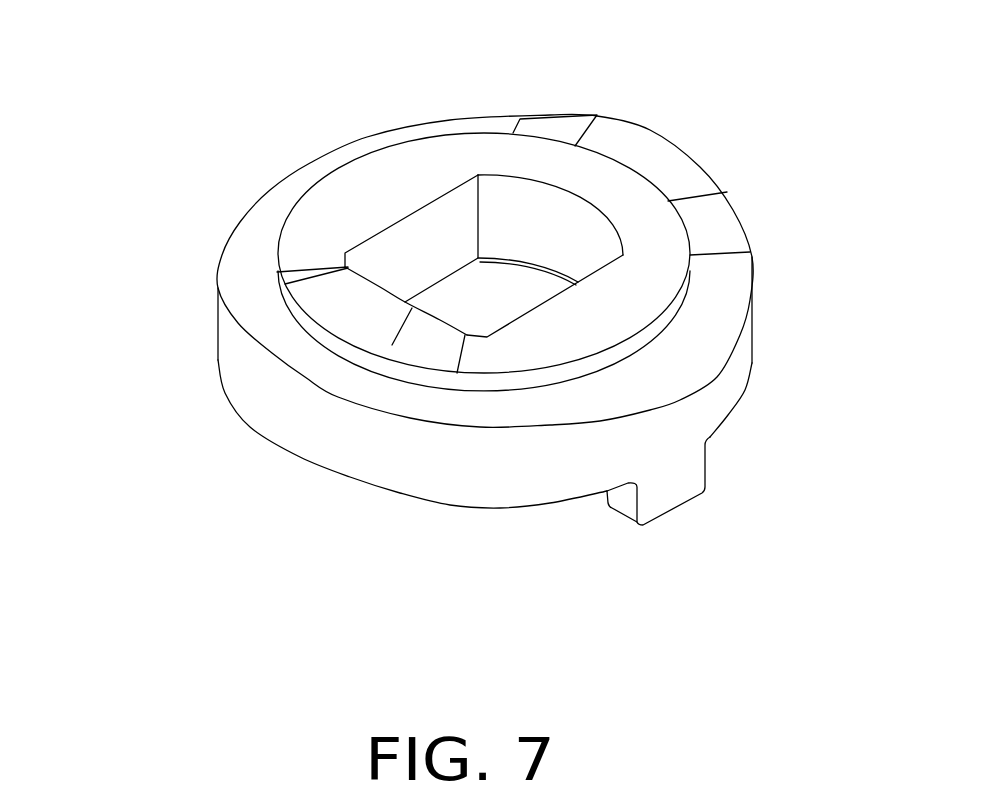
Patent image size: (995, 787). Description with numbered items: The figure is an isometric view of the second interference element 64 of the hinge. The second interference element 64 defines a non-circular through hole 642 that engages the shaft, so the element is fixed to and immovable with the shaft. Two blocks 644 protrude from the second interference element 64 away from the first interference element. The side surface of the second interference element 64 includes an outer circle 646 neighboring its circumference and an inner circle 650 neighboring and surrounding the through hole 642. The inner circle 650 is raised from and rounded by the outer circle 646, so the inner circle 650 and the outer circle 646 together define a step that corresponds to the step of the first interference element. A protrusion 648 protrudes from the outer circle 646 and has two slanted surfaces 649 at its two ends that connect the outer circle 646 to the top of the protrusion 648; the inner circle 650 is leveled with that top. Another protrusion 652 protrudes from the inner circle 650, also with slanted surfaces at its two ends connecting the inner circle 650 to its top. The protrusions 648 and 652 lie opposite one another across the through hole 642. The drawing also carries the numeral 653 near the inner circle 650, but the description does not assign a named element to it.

The second interference element 64 is at (762, 165).
The non-circular through hole 642 is at (520, 228).
The blocks 644 is at (662, 483).
The outer circle 646 is at (255, 237).
The protrusion 648 is at (620, 150).
The slanted surfaces 649 is at (708, 223).
The inner circle 650 is at (372, 193).
The protrusion 652 is at (348, 302).
The slot 653 is at (428, 332).